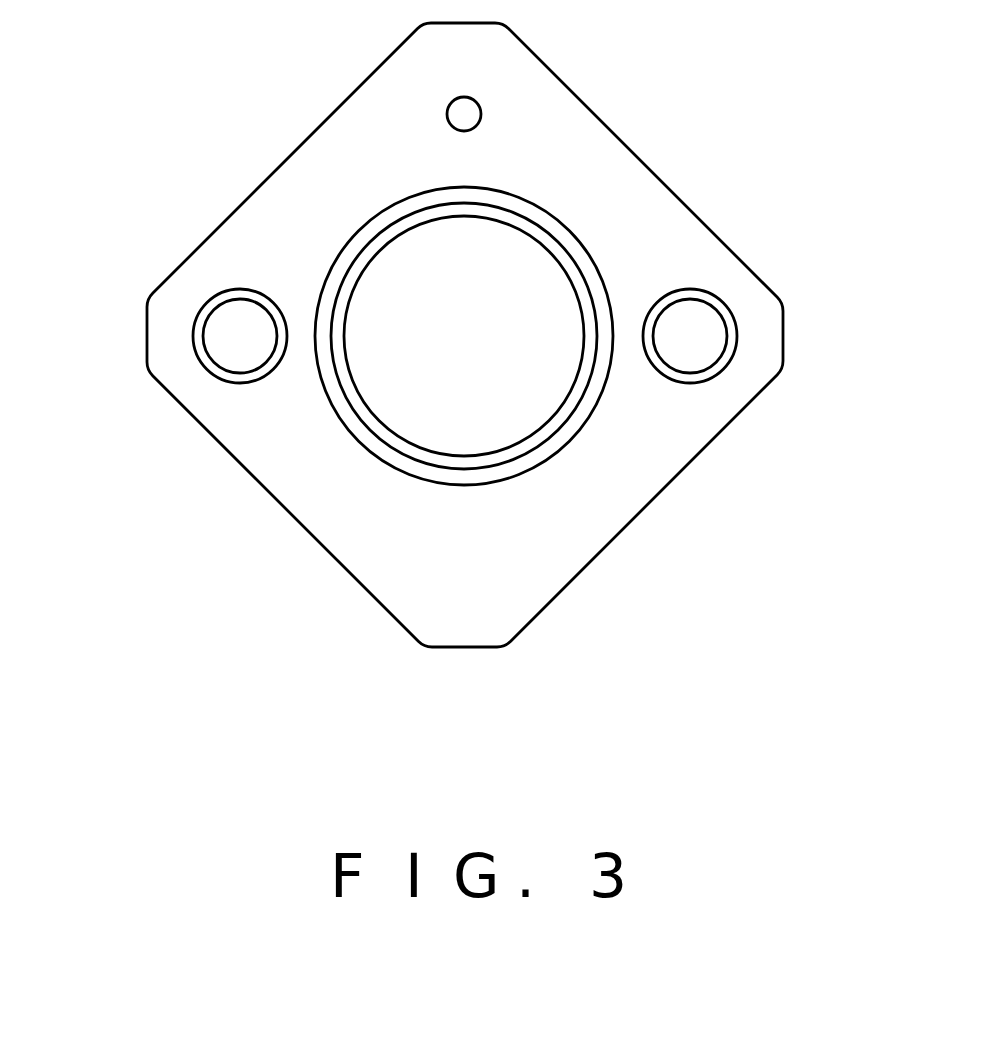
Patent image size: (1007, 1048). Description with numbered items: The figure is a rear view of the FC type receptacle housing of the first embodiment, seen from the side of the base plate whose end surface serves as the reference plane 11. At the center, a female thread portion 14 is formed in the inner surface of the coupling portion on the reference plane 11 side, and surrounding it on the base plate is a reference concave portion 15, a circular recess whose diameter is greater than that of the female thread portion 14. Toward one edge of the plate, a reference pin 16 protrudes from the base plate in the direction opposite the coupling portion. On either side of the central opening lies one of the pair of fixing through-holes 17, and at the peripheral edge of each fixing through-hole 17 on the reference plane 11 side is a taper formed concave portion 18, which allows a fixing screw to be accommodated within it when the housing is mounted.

The reference plane 11 is at (602, 172).
The female thread portion 14 is at (375, 430).
The reference concave portion 15 is at (338, 402).
The reference pin 16 is at (465, 112).
The fixing through-holes 17 is at (233, 335).
The taper formed concave portion 18 is at (196, 352).